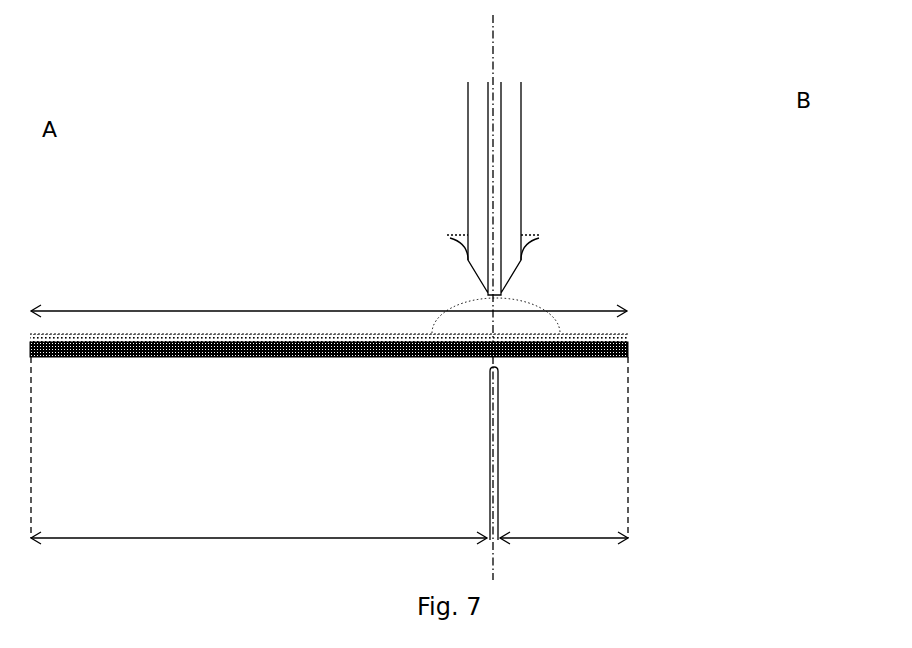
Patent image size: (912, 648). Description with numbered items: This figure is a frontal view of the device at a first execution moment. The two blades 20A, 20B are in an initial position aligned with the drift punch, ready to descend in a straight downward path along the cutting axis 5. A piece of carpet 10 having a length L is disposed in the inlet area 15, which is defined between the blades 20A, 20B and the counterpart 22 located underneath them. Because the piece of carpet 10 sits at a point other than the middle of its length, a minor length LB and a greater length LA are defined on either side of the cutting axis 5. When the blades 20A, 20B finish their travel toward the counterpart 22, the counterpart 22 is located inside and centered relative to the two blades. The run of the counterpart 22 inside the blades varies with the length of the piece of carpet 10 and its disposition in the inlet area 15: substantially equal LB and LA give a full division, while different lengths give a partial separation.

The cutting axis 5 is at (493, 60).
The blade 20A is at (472, 191).
The blade 20B is at (515, 215).
The inlet area 15 is at (517, 300).
The piece of carpet 10 is at (664, 343).
The counterpart 22 is at (498, 497).